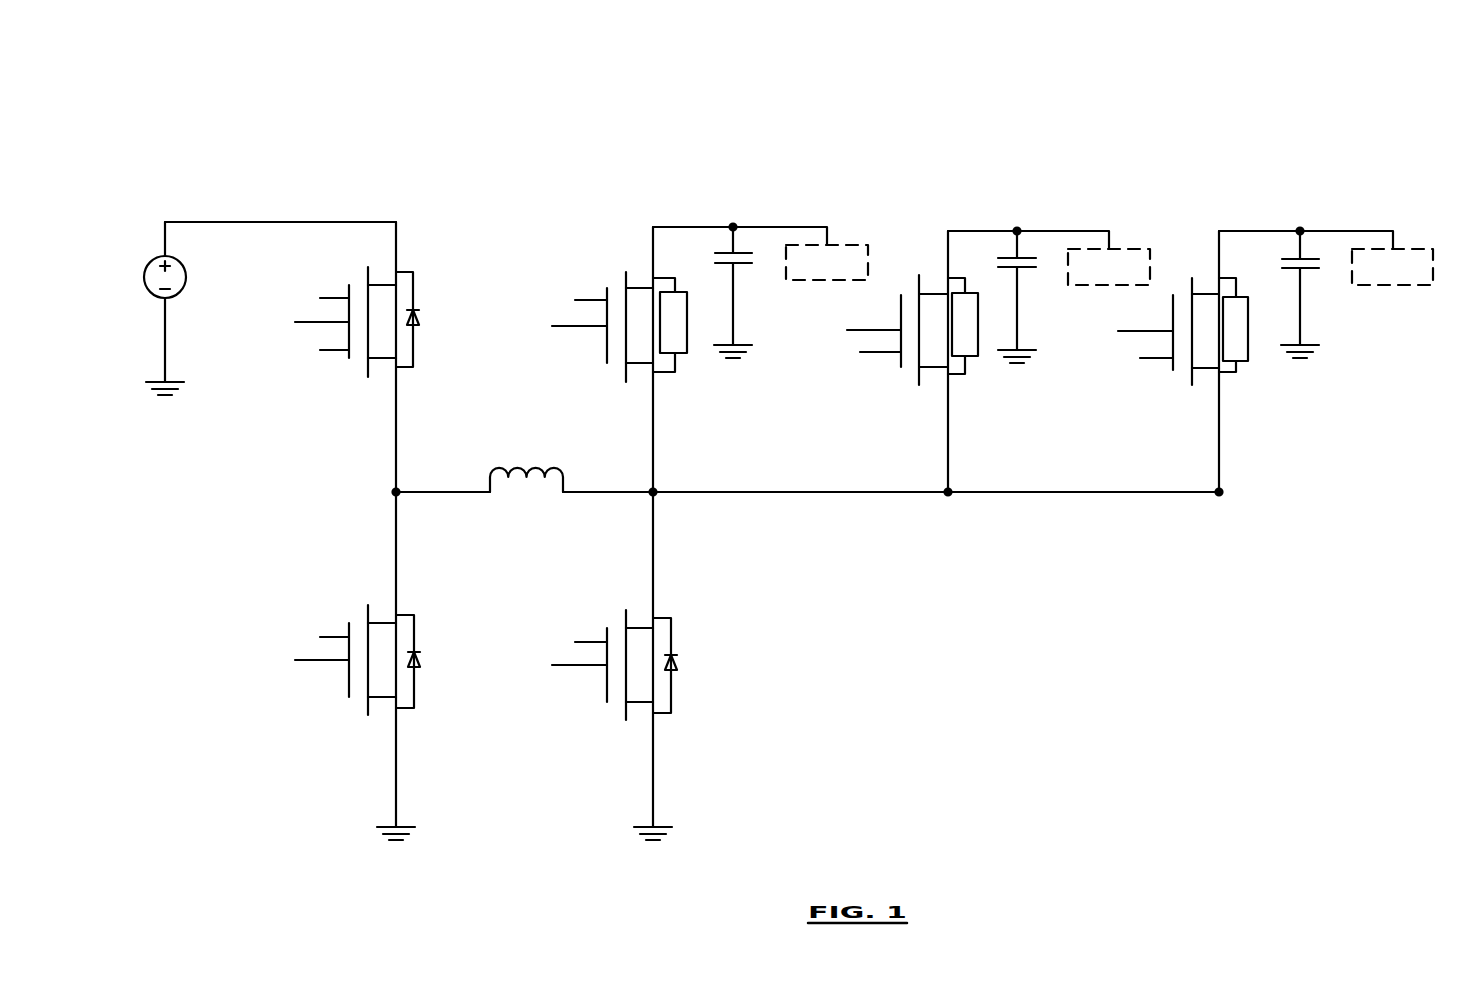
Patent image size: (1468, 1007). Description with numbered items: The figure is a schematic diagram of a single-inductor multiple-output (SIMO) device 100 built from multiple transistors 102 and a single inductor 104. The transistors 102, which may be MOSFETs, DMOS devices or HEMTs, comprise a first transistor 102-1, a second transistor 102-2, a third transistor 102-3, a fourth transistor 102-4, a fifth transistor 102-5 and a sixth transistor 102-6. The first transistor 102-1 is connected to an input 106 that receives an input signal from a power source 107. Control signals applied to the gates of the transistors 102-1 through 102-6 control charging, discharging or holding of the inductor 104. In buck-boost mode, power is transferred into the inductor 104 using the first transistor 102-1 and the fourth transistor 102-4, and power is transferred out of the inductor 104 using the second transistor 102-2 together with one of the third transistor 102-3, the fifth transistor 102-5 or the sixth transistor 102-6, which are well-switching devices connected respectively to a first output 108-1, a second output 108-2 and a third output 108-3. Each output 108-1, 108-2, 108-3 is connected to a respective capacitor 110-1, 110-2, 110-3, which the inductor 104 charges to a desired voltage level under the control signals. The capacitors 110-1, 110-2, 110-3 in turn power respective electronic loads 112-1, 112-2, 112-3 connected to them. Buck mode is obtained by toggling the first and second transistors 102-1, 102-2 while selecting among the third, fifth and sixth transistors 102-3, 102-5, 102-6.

The SIMO device 100 is at (240, 60).
The transistors 102 is at (320, 350).
The first transistor 102-1 is at (320, 298).
The second transistor 102-2 is at (320, 637).
The third transistor 102-3 is at (575, 300).
The fourth transistor 102-4 is at (575, 642).
The fifth transistor 102-5 is at (860, 352).
The sixth transistor 102-6 is at (1140, 358).
The inductor 104 is at (528, 465).
The input 106 is at (293, 222).
The power source 107 is at (157, 295).
The first output 108-1 is at (805, 227).
The second output 108-2 is at (1082, 231).
The third output 108-3 is at (1323, 231).
The first capacitor 110-1 is at (740, 265).
The second capacitor 110-2 is at (1032, 270).
The third capacitor 110-3 is at (1317, 270).
The first electronic load 112-1 is at (850, 245).
The second electronic load 112-2 is at (1128, 249).
The third electronic load 112-3 is at (1390, 285).